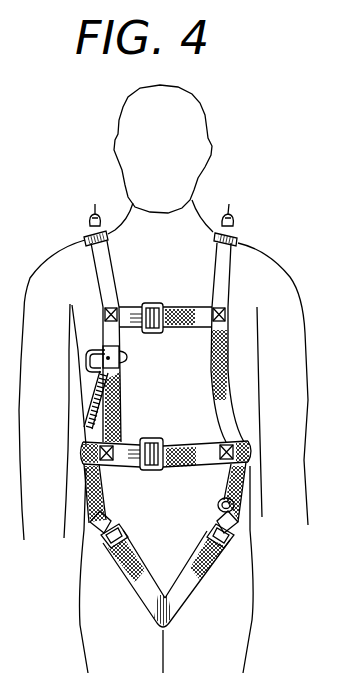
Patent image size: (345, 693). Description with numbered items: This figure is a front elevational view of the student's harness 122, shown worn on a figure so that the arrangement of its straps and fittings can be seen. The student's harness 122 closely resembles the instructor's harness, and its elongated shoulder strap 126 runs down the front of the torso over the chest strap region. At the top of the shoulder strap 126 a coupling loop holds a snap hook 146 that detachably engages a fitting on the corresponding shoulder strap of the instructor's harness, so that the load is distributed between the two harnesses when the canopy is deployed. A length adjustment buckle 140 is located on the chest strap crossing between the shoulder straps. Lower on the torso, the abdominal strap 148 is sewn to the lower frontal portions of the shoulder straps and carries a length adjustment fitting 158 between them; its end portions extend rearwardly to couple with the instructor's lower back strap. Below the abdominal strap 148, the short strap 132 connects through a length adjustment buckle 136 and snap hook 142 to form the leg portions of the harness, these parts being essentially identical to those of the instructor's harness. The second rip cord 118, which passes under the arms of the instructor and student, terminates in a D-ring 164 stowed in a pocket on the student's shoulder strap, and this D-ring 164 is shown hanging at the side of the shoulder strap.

The student's harness 122 is at (70, 229).
The snap hook 146 is at (238, 229).
The shoulder strap 126 is at (98, 277).
The length adjustment buckle 140 is at (166, 290).
The D-ring 164 is at (88, 356).
The second rip cord 118 is at (84, 408).
The abdominal strap 148 is at (190, 449).
The length adjustment fitting 158 is at (153, 434).
The short strap 132 is at (218, 505).
The snap hook 142 is at (86, 537).
The length adjustment buckle 136 is at (236, 547).